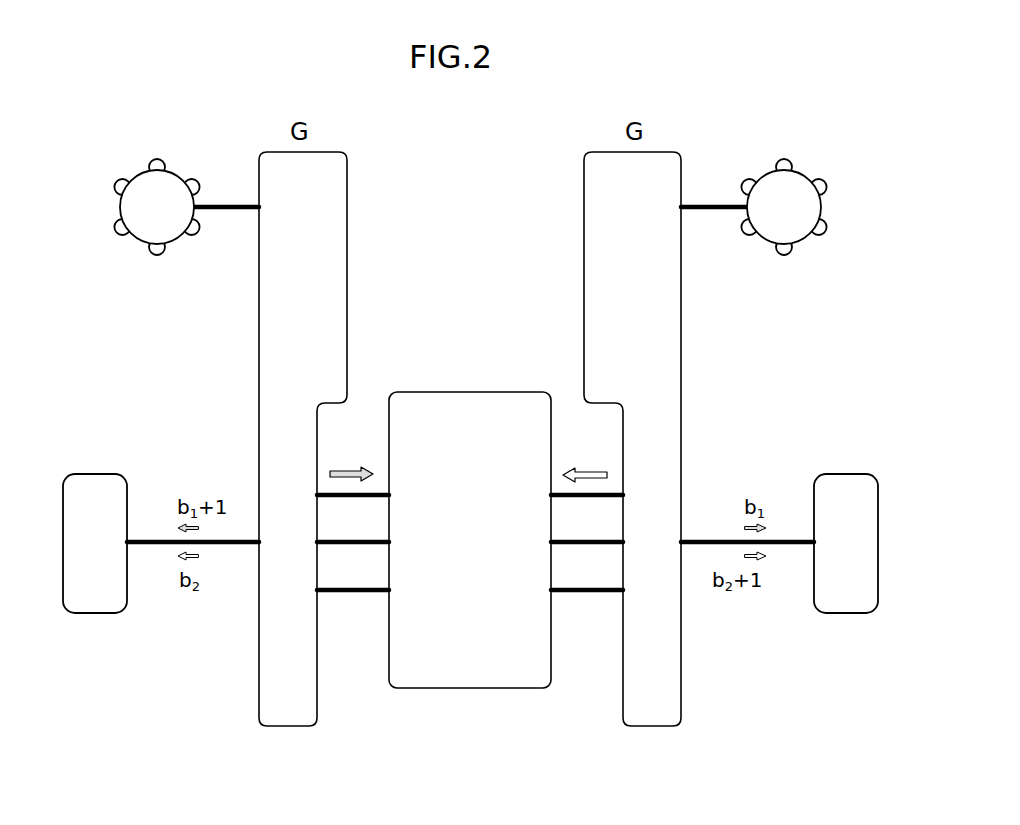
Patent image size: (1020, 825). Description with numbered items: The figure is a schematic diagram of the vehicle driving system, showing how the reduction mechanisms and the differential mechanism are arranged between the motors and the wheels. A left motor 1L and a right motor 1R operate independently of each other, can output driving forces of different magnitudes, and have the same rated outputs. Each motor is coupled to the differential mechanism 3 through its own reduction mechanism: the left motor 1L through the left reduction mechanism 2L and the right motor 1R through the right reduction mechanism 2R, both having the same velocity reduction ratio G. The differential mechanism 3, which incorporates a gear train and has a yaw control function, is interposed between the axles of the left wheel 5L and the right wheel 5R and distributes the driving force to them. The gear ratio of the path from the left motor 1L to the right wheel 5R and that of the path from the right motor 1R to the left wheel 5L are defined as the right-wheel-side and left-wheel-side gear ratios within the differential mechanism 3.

The left motor 1L is at (142, 218).
The right motor 1R is at (767, 218).
The left reduction mechanism 2L is at (347, 247).
The right reduction mechanism 2R is at (584, 247).
The differential mechanism 3 is at (460, 392).
The left wheel 5L is at (78, 555).
The right wheel 5R is at (828, 555).